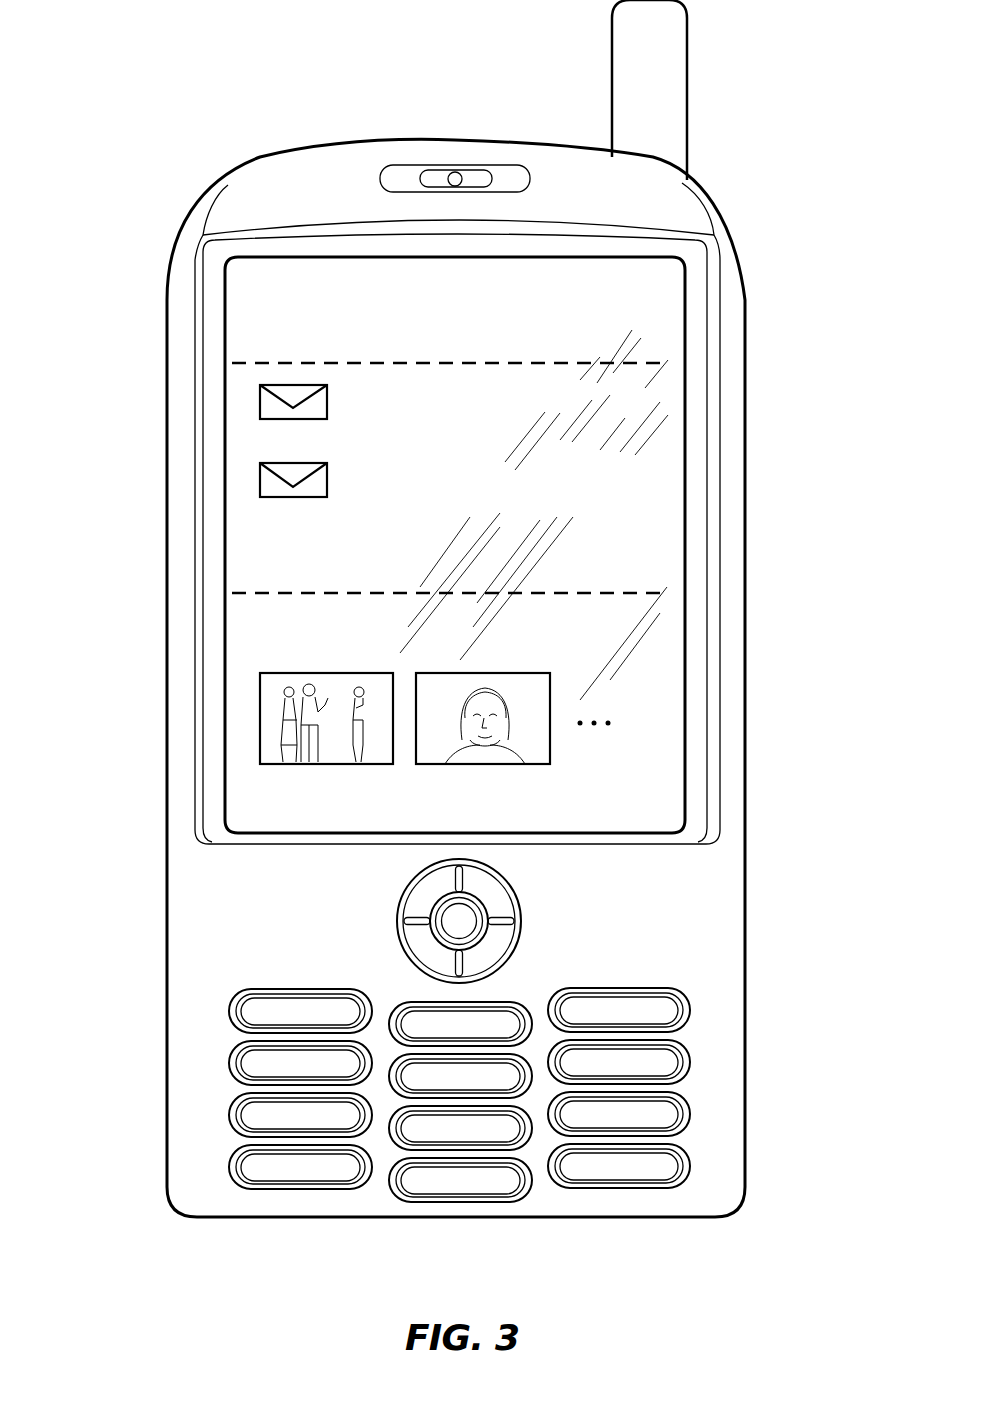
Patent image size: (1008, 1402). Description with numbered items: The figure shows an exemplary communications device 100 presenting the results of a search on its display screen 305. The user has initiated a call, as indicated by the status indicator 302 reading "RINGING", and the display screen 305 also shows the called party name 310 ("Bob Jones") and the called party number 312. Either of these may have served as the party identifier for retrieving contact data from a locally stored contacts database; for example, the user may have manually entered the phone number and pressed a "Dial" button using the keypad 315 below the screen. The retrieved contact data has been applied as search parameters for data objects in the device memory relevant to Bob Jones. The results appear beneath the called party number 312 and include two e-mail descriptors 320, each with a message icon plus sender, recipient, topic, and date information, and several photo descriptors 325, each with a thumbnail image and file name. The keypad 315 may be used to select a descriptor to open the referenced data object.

The communications device 100 is at (747, 1155).
The status indicator 302 is at (672, 343).
The display screen 305 is at (683, 298).
The called party name 310 is at (375, 292).
The called party number 312 is at (397, 327).
The keypad 315 is at (685, 1033).
The e-mail descriptors 320 is at (290, 475).
The photo descriptors 325 is at (427, 695).